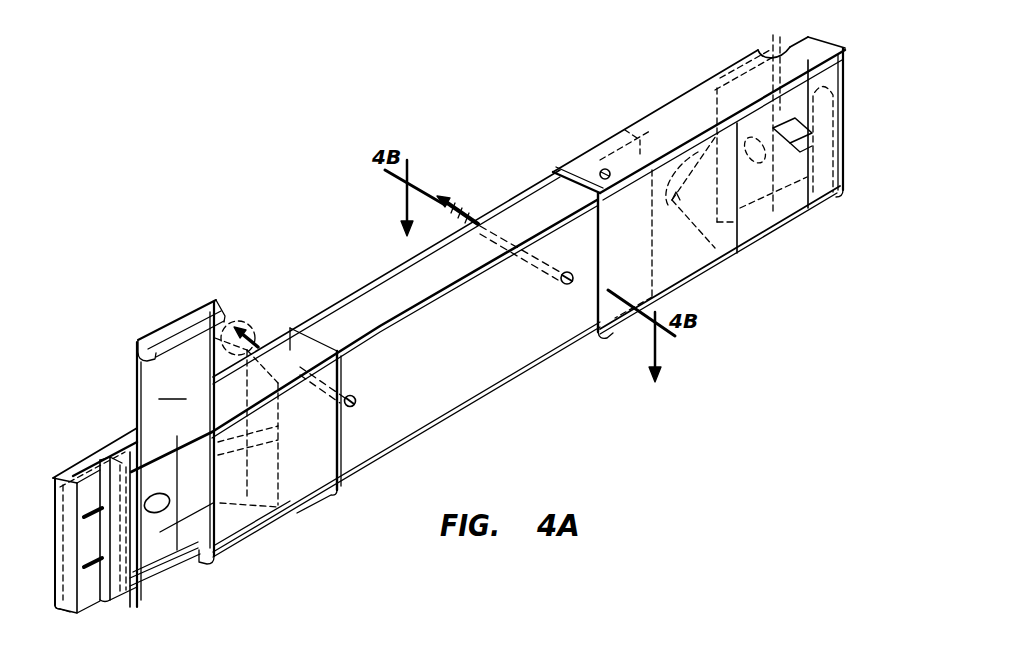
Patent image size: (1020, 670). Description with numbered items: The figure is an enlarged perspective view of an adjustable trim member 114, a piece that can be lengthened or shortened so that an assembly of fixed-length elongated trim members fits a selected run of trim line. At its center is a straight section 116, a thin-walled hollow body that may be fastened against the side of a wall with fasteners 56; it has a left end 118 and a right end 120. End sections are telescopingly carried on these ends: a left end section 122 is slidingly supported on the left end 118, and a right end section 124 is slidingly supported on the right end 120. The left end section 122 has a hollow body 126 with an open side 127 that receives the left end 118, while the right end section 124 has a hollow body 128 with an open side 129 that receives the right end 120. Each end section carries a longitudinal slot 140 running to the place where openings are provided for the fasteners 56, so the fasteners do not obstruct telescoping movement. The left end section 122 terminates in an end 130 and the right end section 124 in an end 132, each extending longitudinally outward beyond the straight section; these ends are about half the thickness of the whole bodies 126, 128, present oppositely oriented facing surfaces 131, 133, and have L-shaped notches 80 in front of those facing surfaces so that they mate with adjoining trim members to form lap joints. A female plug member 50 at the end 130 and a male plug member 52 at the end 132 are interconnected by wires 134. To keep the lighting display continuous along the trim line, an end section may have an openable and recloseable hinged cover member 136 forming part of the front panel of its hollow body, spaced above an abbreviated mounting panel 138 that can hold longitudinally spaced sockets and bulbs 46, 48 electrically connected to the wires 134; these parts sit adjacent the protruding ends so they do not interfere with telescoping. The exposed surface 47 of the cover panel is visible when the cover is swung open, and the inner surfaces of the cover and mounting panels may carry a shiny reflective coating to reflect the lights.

The adjustable trim member 114 is at (345, 196).
The straight section 116 is at (486, 371).
The left end 118 is at (240, 324).
The right end 120 is at (633, 127).
The left end section 122 is at (134, 453).
The right end section 124 is at (657, 96).
The hollow body 126 is at (256, 516).
The open side 127 is at (337, 449).
The hollow body 128 is at (690, 258).
The open side 129 is at (597, 252).
The end 130 is at (55, 478).
The facing surface 131 is at (98, 601).
The end 132 is at (828, 44).
The facing surface 133 is at (779, 48).
The wires 134 is at (731, 257).
The hinged cover member 136 is at (133, 366).
The mounting panel 138 is at (144, 550).
The slot 140 is at (278, 418).
The exposed surface 47 is at (172, 386).
The female plug member 50 is at (76, 611).
The male plug member 52 is at (830, 190).
The fasteners 56 is at (456, 206).
The socket 46 is at (493, 355).
The bulb 48 is at (160, 514).
The L-shaped notch 80 is at (110, 608).